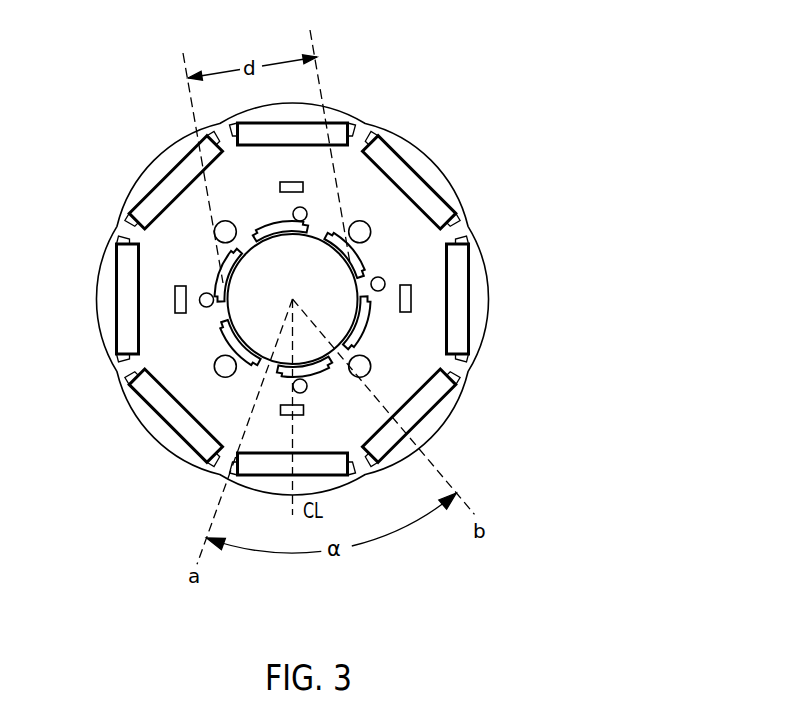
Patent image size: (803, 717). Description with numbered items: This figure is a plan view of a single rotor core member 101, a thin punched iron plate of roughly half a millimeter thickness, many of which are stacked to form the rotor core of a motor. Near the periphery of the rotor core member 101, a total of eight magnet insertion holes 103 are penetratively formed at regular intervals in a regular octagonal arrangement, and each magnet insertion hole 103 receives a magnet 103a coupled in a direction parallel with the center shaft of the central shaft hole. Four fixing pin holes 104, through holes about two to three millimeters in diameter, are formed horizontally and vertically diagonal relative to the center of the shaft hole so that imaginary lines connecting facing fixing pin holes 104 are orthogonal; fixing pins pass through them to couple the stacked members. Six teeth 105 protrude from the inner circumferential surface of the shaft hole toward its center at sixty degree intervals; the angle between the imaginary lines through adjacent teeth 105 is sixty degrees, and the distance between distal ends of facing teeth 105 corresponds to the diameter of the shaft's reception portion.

The rotor core member 101 is at (503, 59).
The magnet insertion hole 103 is at (459, 313).
The magnet 103a is at (460, 287).
The fixing pin hole 104 is at (371, 364).
The tooth 105 is at (224, 306).